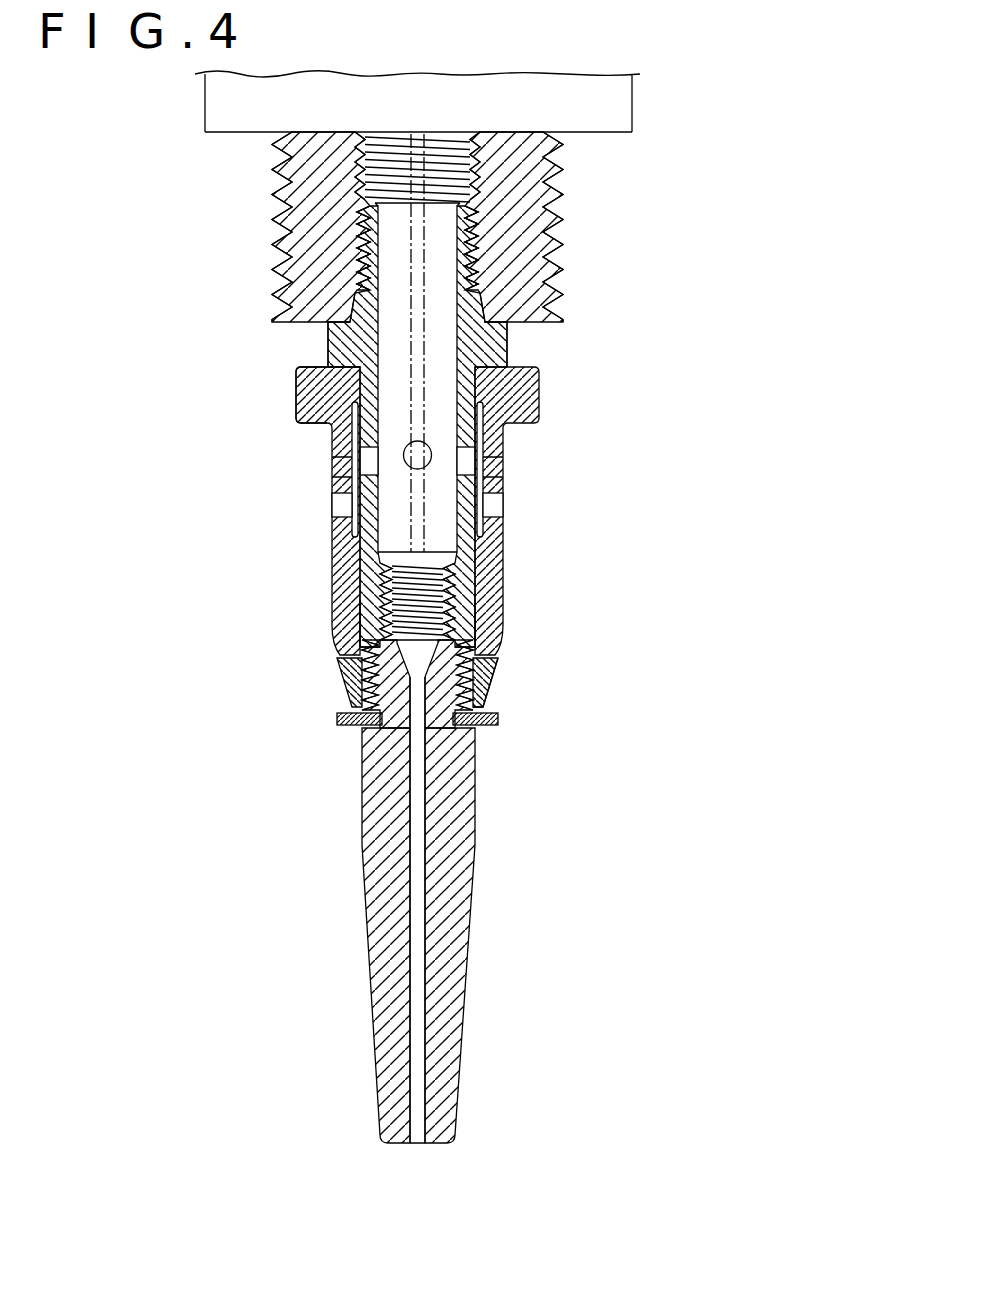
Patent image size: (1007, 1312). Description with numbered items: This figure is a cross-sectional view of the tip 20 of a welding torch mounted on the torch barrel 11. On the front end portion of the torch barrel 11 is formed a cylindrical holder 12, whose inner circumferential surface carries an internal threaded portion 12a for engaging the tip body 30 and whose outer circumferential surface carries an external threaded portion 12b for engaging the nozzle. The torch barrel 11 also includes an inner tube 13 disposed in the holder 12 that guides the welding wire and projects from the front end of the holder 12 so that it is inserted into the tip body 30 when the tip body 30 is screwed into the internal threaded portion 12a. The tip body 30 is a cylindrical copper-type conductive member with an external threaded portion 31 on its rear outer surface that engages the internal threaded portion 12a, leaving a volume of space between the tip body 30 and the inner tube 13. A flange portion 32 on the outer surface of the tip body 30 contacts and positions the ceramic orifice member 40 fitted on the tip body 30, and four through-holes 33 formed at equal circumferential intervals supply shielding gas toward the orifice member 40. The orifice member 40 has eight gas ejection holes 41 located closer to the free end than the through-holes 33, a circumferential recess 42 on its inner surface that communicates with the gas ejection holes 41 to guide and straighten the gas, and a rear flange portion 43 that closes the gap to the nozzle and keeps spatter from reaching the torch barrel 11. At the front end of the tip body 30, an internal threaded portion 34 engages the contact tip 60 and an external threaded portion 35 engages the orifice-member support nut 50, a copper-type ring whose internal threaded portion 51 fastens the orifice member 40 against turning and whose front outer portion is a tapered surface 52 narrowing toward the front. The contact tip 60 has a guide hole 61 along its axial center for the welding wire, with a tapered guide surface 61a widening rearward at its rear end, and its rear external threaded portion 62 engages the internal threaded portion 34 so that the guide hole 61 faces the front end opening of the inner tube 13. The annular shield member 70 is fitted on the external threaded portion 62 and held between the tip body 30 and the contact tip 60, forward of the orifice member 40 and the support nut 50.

The torch barrel 11 is at (626, 106).
The holder 12 is at (548, 188).
The internal threaded portion 12a is at (380, 238).
The external threaded portion 12b is at (270, 217).
The inner tube 13 is at (427, 292).
The tip 20 is at (578, 546).
The tip body 30 is at (512, 342).
The external threaded portion 31 is at (472, 222).
The flange portion 32 is at (335, 344).
The through-holes 33 is at (404, 456).
The internal threaded portion 34 is at (388, 648).
The external threaded portion 35 is at (340, 679).
The orifice member 40 is at (542, 392).
The gas ejection holes 41 is at (492, 508).
The circumferential recess 42 is at (366, 486).
The flange portion 43 is at (306, 393).
The orifice-member support nut 50 is at (500, 663).
The internal threaded portion 51 is at (467, 648).
The tapered surface 52 is at (488, 697).
The contact tip 60 is at (477, 790).
The guide hole 61 is at (418, 857).
The tapered guide surface 61a is at (420, 612).
The external threaded portion 62 is at (345, 719).
The shield member 70 is at (498, 720).